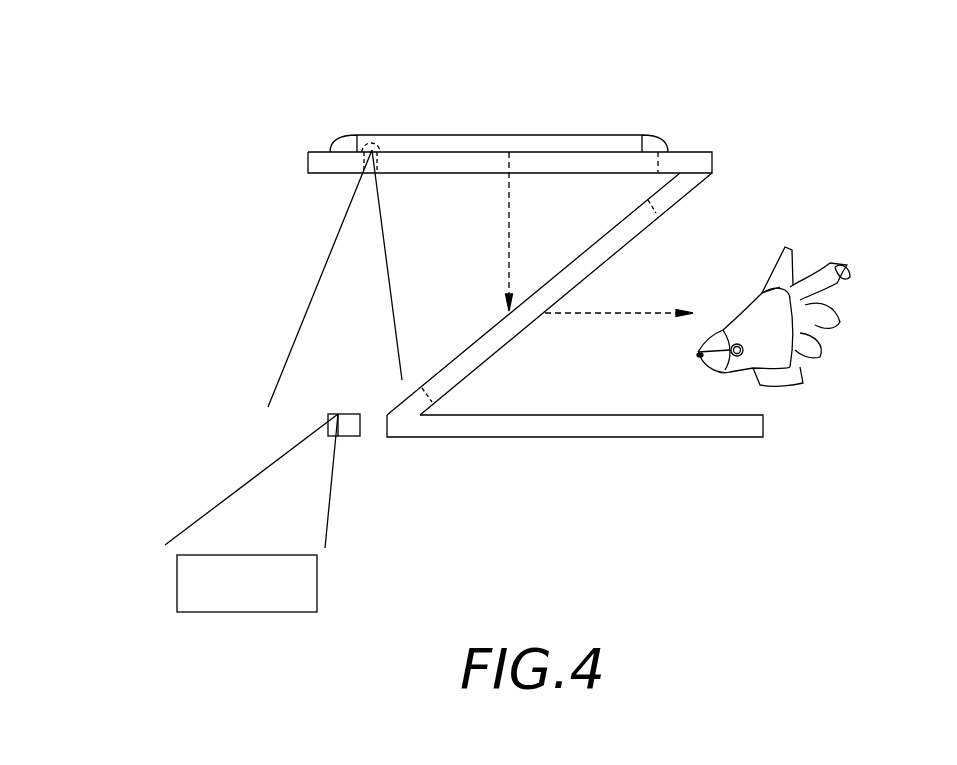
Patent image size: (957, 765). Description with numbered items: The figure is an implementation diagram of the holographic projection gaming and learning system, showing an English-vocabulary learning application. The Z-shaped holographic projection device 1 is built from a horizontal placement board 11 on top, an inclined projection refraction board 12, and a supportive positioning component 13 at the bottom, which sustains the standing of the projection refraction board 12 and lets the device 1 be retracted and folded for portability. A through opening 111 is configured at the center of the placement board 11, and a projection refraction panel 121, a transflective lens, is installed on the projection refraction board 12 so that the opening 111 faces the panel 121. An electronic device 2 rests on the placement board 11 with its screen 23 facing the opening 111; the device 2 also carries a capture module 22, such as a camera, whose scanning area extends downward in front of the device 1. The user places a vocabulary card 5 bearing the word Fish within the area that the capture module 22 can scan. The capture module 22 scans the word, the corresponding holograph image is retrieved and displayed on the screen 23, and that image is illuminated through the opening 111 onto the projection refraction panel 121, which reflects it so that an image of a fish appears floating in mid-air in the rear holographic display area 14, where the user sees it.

The holographic projection device 1 is at (493, 314).
The electronic device 2 is at (623, 135).
The vocabulary card 5 is at (177, 590).
The placement board 11 is at (308, 162).
The projection refraction board 12 is at (688, 192).
The supportive positioning component 13 is at (765, 427).
The holographic display area 14 is at (835, 267).
The capture module 22 is at (372, 143).
The screen 23 is at (490, 152).
The through opening 111 is at (452, 160).
The projection refraction panel 121 is at (477, 350).